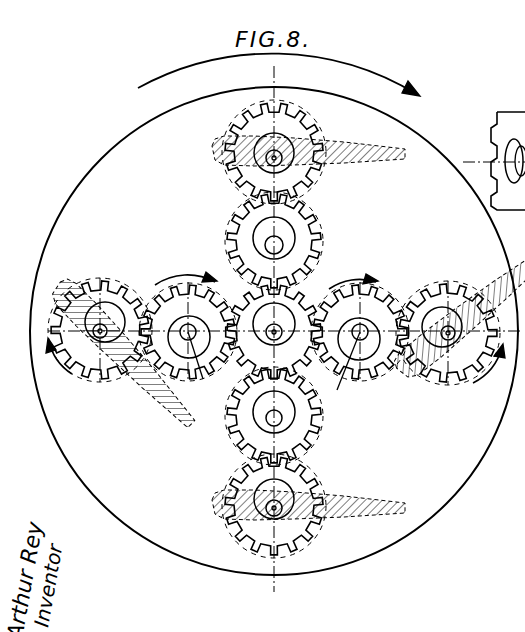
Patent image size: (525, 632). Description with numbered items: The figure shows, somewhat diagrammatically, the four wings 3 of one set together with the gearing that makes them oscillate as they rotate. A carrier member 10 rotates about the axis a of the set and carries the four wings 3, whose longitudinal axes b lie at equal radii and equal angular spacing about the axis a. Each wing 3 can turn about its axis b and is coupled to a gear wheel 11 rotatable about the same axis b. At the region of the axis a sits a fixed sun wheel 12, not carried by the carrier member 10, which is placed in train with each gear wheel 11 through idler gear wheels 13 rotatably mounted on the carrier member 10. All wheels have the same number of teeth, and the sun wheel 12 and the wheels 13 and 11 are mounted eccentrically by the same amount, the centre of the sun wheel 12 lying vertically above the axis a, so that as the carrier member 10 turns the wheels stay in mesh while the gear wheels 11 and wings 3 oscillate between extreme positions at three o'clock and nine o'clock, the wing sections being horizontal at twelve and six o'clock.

The wing 3 is at (358, 165).
The carrier member 10 is at (122, 164).
The gear wheel 11 is at (243, 122).
The sun wheel 12 is at (293, 300).
The idler gear wheel 13 is at (303, 217).
The axis of the set a is at (274, 331).
The longitudinal axis of the wing b is at (270, 160).